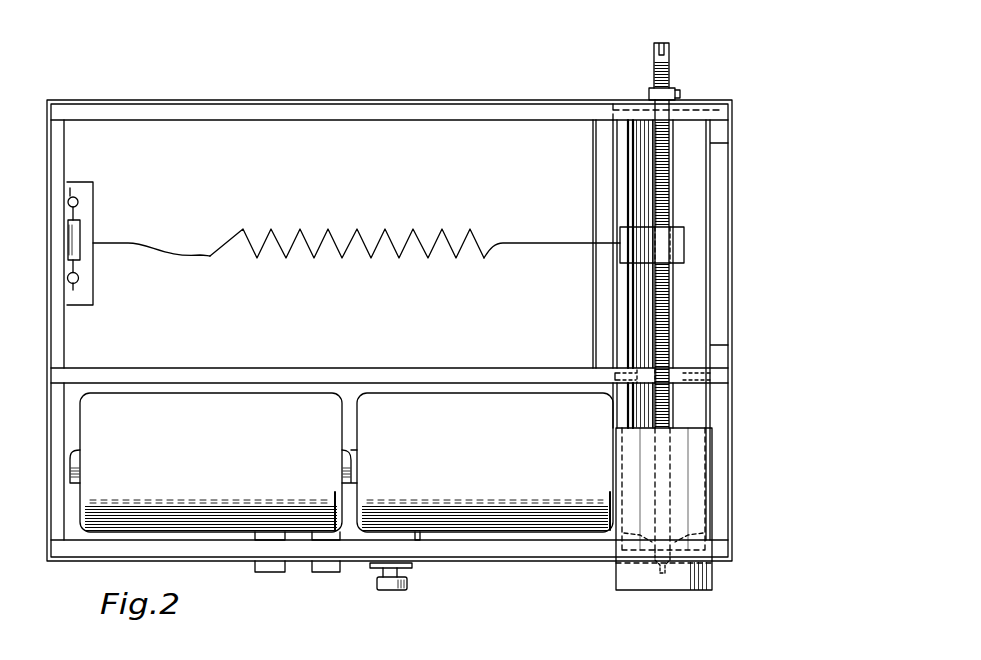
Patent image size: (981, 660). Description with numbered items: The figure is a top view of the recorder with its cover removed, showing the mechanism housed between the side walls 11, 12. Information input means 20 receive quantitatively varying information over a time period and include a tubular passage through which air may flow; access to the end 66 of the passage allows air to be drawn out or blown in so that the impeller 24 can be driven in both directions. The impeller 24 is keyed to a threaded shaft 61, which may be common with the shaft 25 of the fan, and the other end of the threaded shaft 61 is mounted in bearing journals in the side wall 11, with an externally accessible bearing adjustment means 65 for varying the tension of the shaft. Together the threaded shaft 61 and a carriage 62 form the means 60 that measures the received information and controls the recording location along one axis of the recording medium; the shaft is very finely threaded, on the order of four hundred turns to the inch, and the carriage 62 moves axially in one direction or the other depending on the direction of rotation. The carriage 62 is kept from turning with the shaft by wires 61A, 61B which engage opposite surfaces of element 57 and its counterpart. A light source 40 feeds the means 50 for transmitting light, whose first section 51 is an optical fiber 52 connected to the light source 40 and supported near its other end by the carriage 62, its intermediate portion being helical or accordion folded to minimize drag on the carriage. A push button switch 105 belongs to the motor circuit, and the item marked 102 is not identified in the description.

The side wall 11 is at (405, 100).
The side wall 12 is at (490, 562).
The information input means 20 is at (714, 521).
The impeller 24 is at (692, 520).
The shaft 25 is at (655, 504).
The light source 40 is at (77, 186).
The means for transmitting light 50 is at (356, 199).
The first section 51 is at (320, 207).
The optical fiber 52 is at (168, 246).
The element 57 is at (607, 204).
The measuring means 60 is at (661, 232).
The threaded shaft 61 is at (656, 264).
The wire 61A is at (607, 264).
The wire 61B is at (617, 226).
The carriage 62 is at (676, 248).
The bearing adjustment means 65 is at (652, 50).
The end of the passage 66 is at (701, 480).
The batteries 102 is at (243, 468).
The push button switch 105 is at (392, 586).